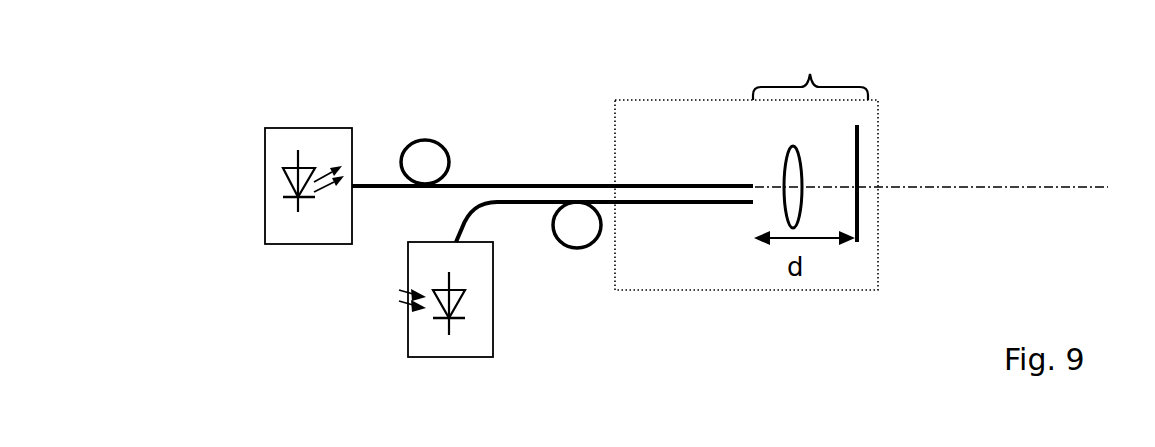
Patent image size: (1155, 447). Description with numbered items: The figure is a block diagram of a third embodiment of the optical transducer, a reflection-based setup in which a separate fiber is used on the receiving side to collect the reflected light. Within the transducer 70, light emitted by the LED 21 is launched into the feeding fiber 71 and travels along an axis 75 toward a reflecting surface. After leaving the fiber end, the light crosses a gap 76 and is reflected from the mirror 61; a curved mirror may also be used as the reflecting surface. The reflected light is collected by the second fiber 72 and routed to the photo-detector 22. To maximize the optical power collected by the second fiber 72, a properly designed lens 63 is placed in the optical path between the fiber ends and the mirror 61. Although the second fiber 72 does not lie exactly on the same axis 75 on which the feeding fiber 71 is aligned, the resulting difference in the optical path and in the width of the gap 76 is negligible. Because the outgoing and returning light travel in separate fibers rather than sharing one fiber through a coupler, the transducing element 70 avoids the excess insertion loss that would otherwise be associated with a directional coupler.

The LED 21 is at (279, 223).
The photo-detector 22 is at (452, 348).
The mirror 61 is at (859, 152).
The lens 63 is at (784, 160).
The transducer 70 is at (652, 100).
The feeding fiber 71 is at (425, 144).
The second fiber 72 is at (577, 247).
The axis 75 is at (931, 170).
The gap 76 is at (810, 64).